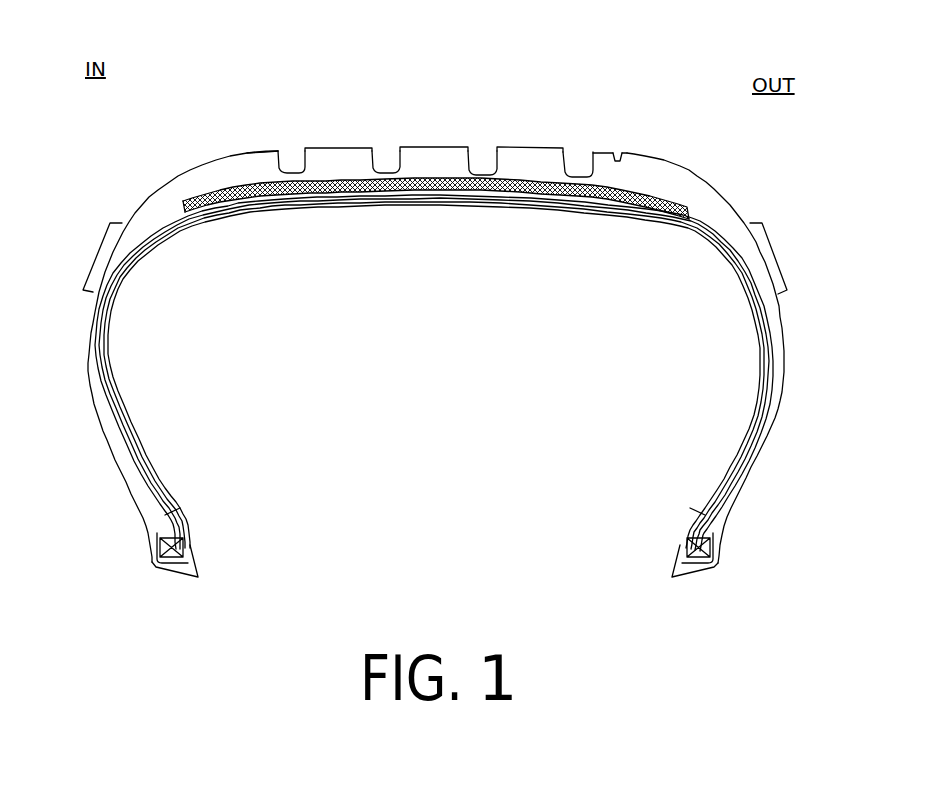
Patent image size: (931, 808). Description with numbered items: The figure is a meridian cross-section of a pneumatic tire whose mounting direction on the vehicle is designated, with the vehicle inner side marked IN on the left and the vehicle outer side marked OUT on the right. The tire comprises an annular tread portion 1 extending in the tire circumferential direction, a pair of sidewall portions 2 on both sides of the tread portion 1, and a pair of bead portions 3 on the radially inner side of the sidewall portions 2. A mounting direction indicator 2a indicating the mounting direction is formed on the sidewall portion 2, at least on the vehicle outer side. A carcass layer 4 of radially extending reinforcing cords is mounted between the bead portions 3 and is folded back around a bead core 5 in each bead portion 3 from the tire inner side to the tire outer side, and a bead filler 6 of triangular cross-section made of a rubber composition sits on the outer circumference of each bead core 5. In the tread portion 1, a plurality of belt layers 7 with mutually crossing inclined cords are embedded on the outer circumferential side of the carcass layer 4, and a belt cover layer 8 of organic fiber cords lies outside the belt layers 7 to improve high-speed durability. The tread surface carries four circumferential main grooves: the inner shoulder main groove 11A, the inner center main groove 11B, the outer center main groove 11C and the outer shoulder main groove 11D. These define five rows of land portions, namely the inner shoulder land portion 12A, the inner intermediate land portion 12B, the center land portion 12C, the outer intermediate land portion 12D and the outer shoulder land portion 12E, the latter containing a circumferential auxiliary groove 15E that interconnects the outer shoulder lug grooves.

The tread portion 1 is at (527, 147).
The sidewall portion 2 is at (84, 353).
The mounting direction indicator 2a is at (97, 260).
The bead portion 3 is at (147, 550).
The carcass layer 4 is at (713, 237).
The bead core 5 is at (187, 547).
The bead filler 6 is at (168, 513).
The belt layer 7 is at (601, 198).
The belt cover layer 8 is at (683, 197).
The inner shoulder main groove 11A is at (298, 167).
The inner center main groove 11B is at (393, 157).
The outer center main groove 11C is at (492, 157).
The outer shoulder main groove 11D is at (567, 162).
The inner shoulder land portion 12A is at (247, 163).
The inner intermediate land portion 12B is at (347, 157).
The center land portion 12C is at (440, 157).
The outer intermediate land portion 12D is at (522, 157).
The outer shoulder land portion 12E is at (653, 177).
The circumferential auxiliary groove 15E is at (617, 160).